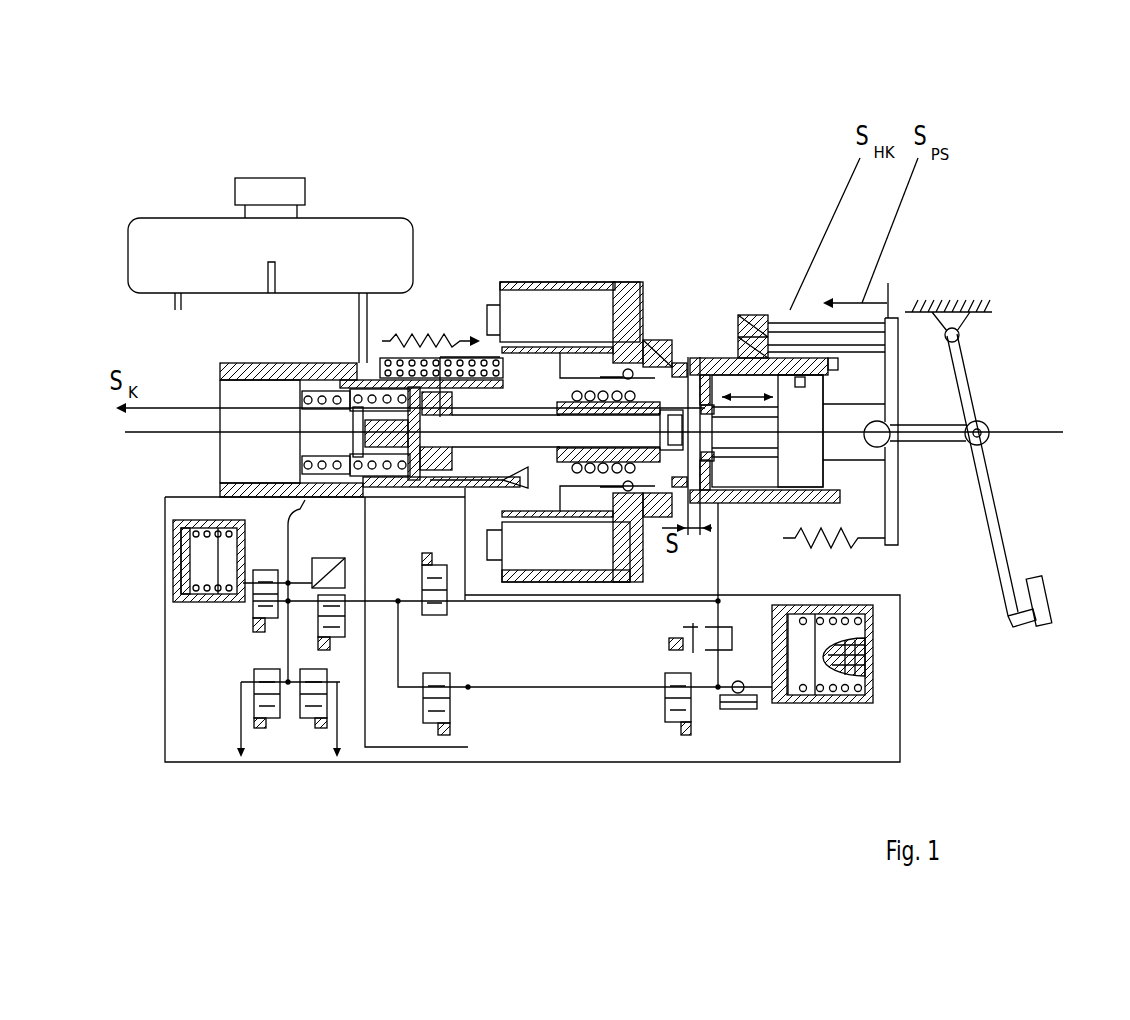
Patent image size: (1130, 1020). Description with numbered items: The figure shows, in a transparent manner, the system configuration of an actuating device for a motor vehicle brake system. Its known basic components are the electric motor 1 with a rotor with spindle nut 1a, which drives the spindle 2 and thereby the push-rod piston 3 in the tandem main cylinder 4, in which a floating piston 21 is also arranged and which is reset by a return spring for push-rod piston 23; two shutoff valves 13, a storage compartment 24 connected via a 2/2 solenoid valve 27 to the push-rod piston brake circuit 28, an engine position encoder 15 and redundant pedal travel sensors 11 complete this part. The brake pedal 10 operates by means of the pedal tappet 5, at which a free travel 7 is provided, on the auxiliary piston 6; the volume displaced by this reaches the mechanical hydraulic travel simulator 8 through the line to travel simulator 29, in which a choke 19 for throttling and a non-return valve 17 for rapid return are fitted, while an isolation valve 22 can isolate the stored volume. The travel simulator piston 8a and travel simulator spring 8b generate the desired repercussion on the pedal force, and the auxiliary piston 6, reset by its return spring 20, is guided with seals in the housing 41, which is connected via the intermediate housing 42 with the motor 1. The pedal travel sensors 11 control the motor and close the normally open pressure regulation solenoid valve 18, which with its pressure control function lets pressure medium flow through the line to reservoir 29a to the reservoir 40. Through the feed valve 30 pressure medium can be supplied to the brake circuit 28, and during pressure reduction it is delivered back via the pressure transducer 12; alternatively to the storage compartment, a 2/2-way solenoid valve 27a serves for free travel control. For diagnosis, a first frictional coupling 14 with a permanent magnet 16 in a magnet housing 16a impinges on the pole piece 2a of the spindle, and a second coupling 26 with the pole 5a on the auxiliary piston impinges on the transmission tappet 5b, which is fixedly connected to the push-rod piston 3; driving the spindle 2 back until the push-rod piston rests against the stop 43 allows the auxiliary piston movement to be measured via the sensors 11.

The electric motor 1 is at (562, 318).
The rotor with spindle nut 1a is at (585, 350).
The spindle 2 is at (553, 372).
The pole piece of the spindle 2a is at (442, 390).
The push-rod piston 3 is at (363, 372).
The tandem main cylinder 4 is at (232, 372).
The pedal tappet 5 is at (933, 425).
The pole at auxiliary piston 5a is at (702, 392).
The transmission tappet 5b is at (660, 372).
The auxiliary piston 6 is at (812, 402).
The free travel at pedal tappet 7 is at (698, 520).
The travel simulator 8 is at (865, 657).
The travel simulator piston 8a is at (803, 682).
The travel simulator spring 8b is at (832, 692).
The brake pedal 10 is at (985, 472).
The pedal travel sensor 11 is at (760, 352).
The pressure transducer 12 is at (320, 573).
The switching valve 13 is at (318, 706).
The first coupling 14 is at (437, 367).
The position encoder 15 is at (655, 350).
The permanent magnet 16 is at (412, 347).
The magnet housing 16a is at (465, 600).
The non-return valve 17 is at (450, 380).
The pressure regulation solenoid valve 18 is at (676, 723).
The choke 19 is at (737, 709).
The return spring for auxiliary piston 20 is at (885, 528).
The floating piston 21 is at (243, 395).
The isolation valve for travel simulator 22 is at (696, 642).
The return spring for push-rod piston 23 is at (320, 398).
The storage compartment 24 is at (173, 582).
The second coupling 26 is at (684, 390).
The 2/2-way solenoid valve for storage compartment 27 is at (253, 607).
The 2/2-way solenoid valve for free travel control 27a is at (428, 724).
The brake circuit push-rod piston 28 is at (283, 702).
The line to travel simulator 29 is at (723, 578).
The line to reservoir 29a is at (556, 687).
The feed valve 30 is at (430, 617).
The reservoir 40 is at (278, 250).
The housing for auxiliary piston 41 is at (718, 365).
The housing intermediate part 42 is at (672, 380).
The push-rod piston stop 43 is at (520, 467).